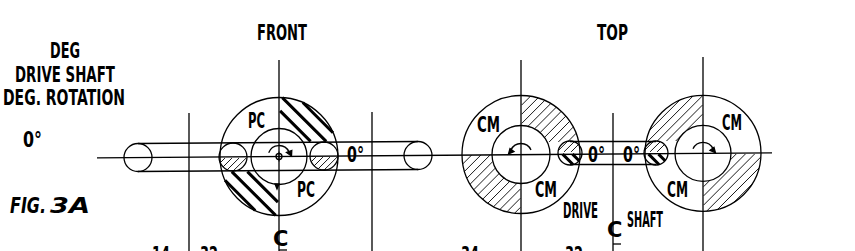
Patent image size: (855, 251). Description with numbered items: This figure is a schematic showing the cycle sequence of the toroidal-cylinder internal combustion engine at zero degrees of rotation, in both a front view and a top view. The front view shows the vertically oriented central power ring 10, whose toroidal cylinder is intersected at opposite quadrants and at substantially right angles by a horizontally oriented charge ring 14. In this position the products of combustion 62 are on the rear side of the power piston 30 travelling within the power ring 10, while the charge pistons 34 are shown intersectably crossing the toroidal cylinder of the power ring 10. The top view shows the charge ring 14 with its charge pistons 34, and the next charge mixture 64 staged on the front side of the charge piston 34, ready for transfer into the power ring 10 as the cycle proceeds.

The power ring 10 is at (289, 147).
The charge ring 14 is at (158, 137).
The power piston 30 is at (303, 105).
The charge piston 34 is at (222, 148).
The products of combustion 62 is at (262, 108).
The charge mixture 64 is at (503, 108).